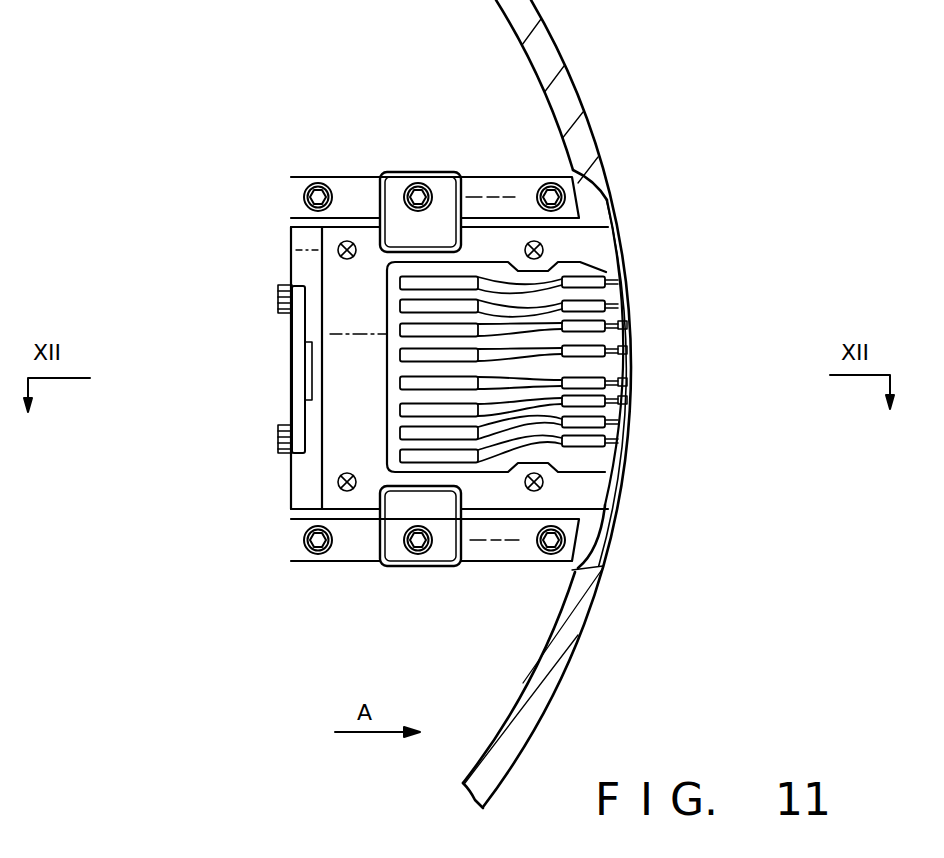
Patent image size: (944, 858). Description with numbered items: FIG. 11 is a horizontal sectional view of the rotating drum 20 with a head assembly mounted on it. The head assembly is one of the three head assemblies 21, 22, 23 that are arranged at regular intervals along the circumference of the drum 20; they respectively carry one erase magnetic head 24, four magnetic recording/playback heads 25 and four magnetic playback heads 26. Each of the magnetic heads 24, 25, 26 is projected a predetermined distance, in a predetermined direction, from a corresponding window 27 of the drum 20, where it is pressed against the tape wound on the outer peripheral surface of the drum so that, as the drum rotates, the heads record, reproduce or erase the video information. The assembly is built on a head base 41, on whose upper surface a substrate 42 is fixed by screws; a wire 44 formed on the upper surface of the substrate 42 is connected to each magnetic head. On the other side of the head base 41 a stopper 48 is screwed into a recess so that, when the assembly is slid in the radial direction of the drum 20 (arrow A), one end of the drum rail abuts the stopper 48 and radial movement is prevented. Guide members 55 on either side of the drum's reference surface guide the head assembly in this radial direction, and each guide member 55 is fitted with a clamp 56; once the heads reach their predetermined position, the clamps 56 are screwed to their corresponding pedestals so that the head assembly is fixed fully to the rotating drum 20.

The rotating drum 20 is at (600, 119).
The head assembly 21 is at (193, 369).
The head assembly 22 is at (193, 369).
The head assembly 23 is at (258, 431).
The erase magnetic head 24 is at (700, 357).
The magnetic recording/playback head 25 is at (700, 357).
The magnetic playback head 26 is at (628, 351).
The window 27 is at (628, 413).
The head base 41 is at (292, 488).
The substrate 42 is at (340, 292).
The wire 44 is at (603, 272).
The stopper 48 is at (292, 357).
The guide member 55 is at (490, 177).
The clamp 56 is at (398, 170).